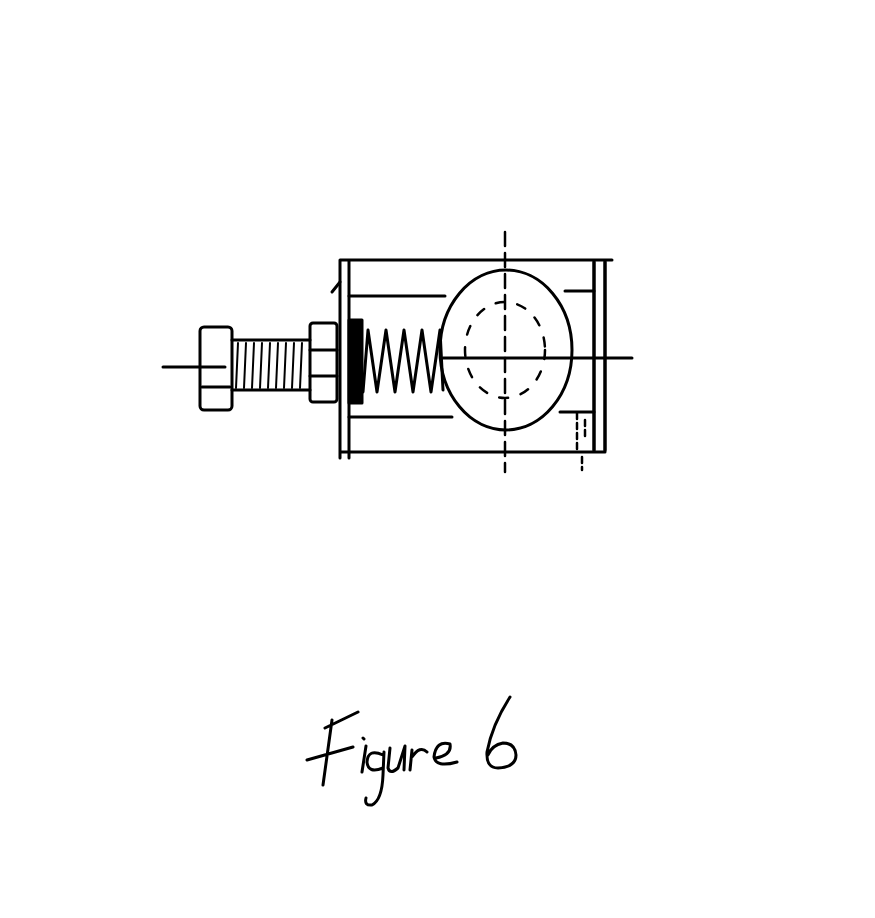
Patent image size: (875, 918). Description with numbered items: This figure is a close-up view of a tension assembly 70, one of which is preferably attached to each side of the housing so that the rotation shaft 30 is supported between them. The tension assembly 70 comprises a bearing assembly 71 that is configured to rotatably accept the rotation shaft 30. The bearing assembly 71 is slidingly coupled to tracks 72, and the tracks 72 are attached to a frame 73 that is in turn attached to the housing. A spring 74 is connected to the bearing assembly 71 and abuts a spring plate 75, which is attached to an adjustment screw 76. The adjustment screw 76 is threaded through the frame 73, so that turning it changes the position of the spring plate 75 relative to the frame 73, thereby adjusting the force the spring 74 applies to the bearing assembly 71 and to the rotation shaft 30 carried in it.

The tension assembly 70 is at (353, 165).
The bearing assembly 71 is at (573, 327).
The tracks 72 is at (397, 305).
The frame 73 is at (605, 401).
The rotation shaft 30 is at (518, 303).
The spring 74 is at (390, 380).
The spring plate 75 is at (352, 325).
The adjustment screw 76 is at (267, 387).